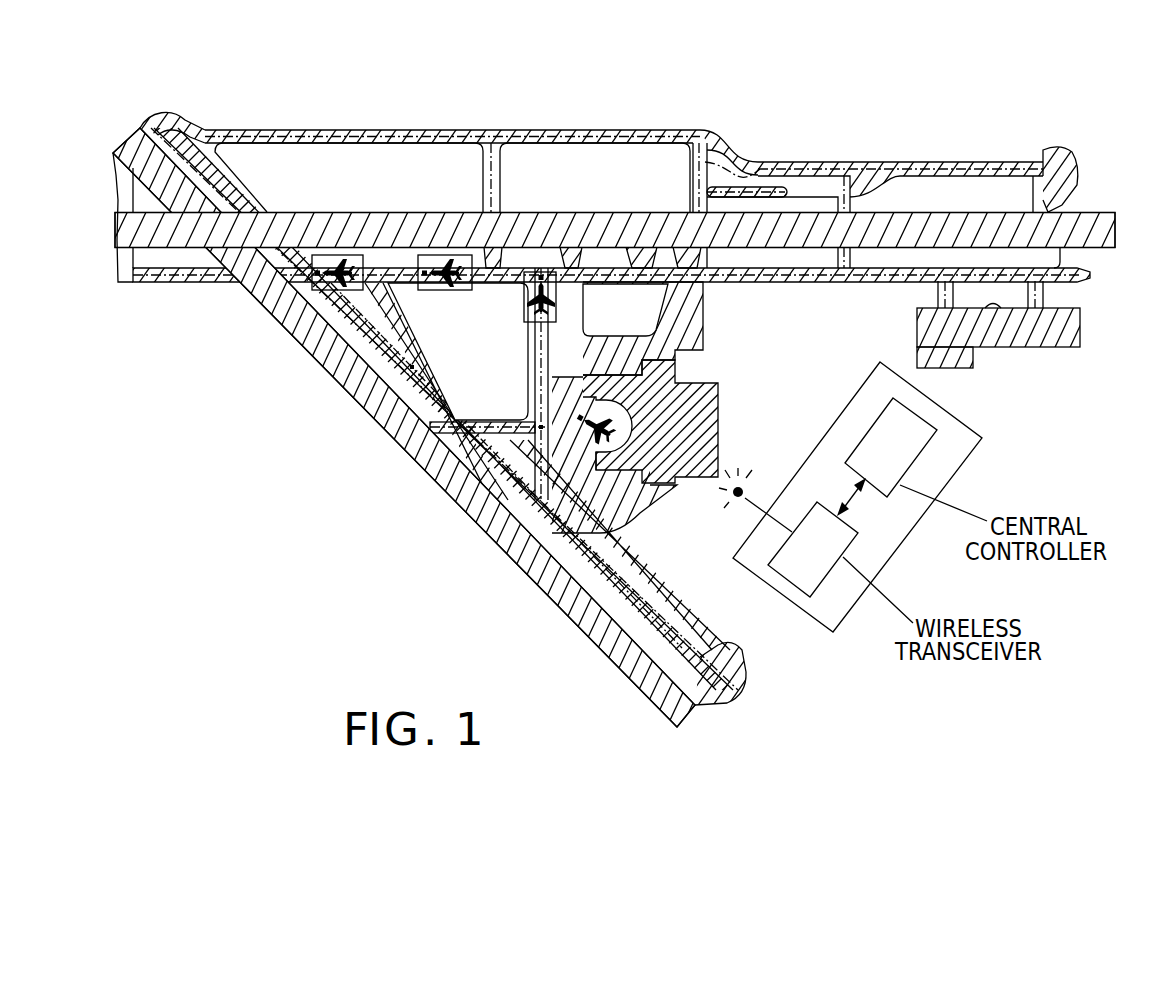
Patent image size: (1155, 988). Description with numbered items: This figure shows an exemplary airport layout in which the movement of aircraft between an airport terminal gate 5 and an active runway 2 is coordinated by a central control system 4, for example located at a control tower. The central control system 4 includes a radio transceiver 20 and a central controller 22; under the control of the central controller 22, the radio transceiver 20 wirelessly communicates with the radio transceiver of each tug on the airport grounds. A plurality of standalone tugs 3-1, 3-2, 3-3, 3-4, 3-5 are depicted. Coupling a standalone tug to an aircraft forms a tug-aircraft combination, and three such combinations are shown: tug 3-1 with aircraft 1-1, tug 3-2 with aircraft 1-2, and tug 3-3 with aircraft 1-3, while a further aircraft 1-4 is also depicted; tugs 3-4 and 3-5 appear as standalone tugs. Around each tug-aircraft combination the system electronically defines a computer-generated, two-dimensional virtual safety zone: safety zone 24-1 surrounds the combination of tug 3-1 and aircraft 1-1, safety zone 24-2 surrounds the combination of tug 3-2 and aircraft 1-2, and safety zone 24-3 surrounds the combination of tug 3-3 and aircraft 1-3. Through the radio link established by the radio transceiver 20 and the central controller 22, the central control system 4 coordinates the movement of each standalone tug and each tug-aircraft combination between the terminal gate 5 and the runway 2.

The active runway 2 is at (580, 222).
The aircraft 1-1 is at (357, 255).
The aircraft 1-2 is at (460, 255).
The aircraft 1-3 is at (527, 322).
The aircraft 1-4 is at (500, 541).
The tug 3-1 is at (320, 272).
The tug 3-2 is at (430, 271).
The tug 3-3 is at (526, 285).
The tug 3-4 is at (382, 420).
The tug 3-5 is at (533, 490).
The safety zone 24-1 is at (330, 255).
The safety zone 24-2 is at (428, 255).
The safety zone 24-3 is at (541, 270).
The central control system 4 is at (850, 397).
The airport terminal gate 5 is at (695, 402).
The radio transceiver 20 is at (793, 593).
The central controller 22 is at (935, 450).